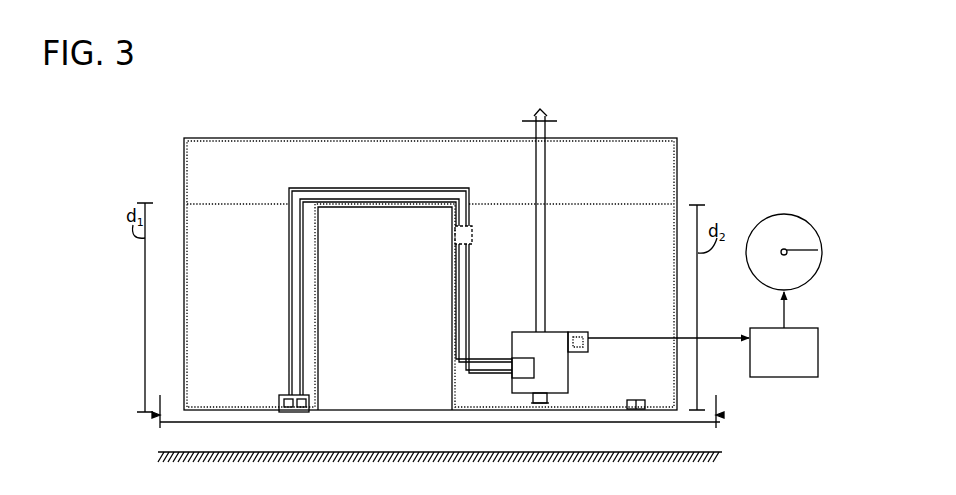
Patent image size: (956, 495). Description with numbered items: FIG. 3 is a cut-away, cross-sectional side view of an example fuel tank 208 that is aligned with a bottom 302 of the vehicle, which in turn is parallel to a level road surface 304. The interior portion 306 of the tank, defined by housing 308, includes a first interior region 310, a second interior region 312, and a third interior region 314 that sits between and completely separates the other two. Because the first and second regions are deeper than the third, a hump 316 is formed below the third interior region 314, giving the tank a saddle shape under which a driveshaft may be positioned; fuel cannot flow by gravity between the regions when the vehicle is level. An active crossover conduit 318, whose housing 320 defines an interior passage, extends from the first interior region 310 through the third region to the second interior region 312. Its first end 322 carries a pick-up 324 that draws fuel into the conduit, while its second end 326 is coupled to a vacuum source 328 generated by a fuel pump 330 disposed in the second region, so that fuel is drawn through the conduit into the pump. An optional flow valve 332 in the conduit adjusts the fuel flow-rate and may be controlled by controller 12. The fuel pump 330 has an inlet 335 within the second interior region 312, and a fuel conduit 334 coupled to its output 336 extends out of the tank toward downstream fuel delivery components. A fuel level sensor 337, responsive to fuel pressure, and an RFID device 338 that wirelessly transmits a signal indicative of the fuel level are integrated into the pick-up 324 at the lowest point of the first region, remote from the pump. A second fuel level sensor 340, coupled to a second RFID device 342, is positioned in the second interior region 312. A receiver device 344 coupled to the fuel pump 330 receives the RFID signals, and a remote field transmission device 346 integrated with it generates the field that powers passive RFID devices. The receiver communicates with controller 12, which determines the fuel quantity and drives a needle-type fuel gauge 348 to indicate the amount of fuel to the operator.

The fuel tank 208 is at (355, 104).
The bottom of the vehicle 302 is at (245, 422).
The level road surface 304 is at (313, 452).
The interior portion 306 is at (211, 151).
The housing 308 is at (185, 168).
The first interior region 310 is at (265, 316).
The second interior region 312 is at (578, 316).
The third interior region 314 is at (443, 180).
The hump 316 is at (383, 226).
The active crossover conduit 318 is at (343, 197).
The housing of the active crossover conduit 320 is at (289, 190).
The first end of the active crossover conduit 322 is at (284, 391).
The pick-up 324 is at (279, 398).
The second end of the active crossover conduit 326 is at (507, 359).
The vacuum source 328 is at (533, 361).
The fuel pump 330 is at (560, 372).
The flow valve 332 is at (474, 227).
The fuel conduit 334 is at (546, 188).
The inlet 335 is at (540, 405).
The output of the fuel pump 336 is at (530, 330).
The fuel level sensor 337 is at (293, 411).
The RFID device 338 is at (310, 405).
The second fuel level sensor 340 is at (628, 401).
The second RFID device 342 is at (642, 400).
The receiver device 344 is at (587, 332).
The remote field transmission device 346 is at (588, 345).
The fuel gauge 348 is at (800, 223).
The controller 12 is at (794, 368).